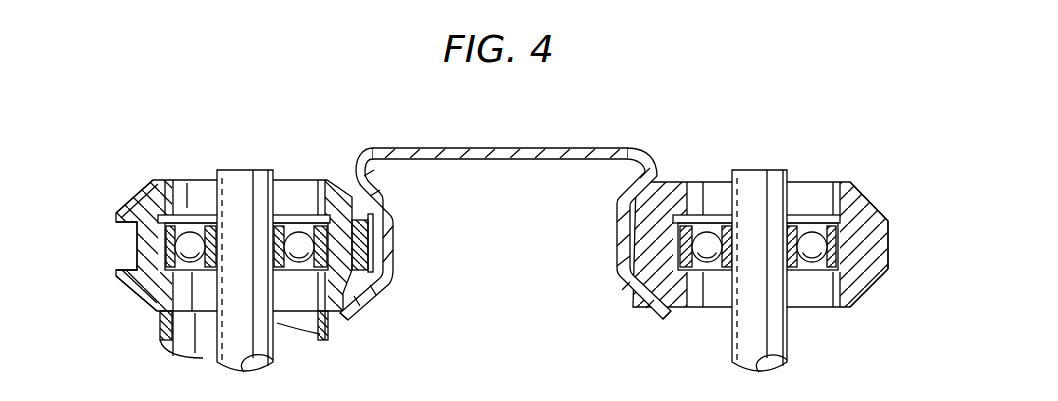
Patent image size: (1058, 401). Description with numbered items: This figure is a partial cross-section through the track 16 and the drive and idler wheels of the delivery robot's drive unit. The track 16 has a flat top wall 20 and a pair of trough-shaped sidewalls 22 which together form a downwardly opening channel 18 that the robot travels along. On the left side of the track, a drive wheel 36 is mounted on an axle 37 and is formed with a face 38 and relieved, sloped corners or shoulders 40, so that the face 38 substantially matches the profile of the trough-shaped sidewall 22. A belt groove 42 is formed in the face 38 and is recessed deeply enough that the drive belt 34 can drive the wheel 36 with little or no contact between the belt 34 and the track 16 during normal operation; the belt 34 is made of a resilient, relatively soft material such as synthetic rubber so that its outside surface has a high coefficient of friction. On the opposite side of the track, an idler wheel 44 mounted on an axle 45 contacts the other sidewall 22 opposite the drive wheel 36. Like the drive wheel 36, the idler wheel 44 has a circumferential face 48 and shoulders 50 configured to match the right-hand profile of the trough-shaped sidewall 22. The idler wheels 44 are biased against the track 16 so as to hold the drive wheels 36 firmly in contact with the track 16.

The track 16 is at (505, 209).
The channel 18 is at (500, 293).
The flat top wall 20 is at (388, 147).
The trough shaped sidewalls 22 is at (380, 293).
The drive belt 34 is at (370, 243).
The drive wheels 36 is at (179, 174).
The axle 37 is at (241, 168).
The face 38 is at (115, 212).
The relieved corners or shoulders 40 is at (133, 190).
The belt groove 42 is at (133, 246).
The idler wheels 44 is at (820, 168).
The axle 45 is at (761, 168).
The circumferential face 48 is at (890, 247).
The shoulders 50 is at (865, 195).